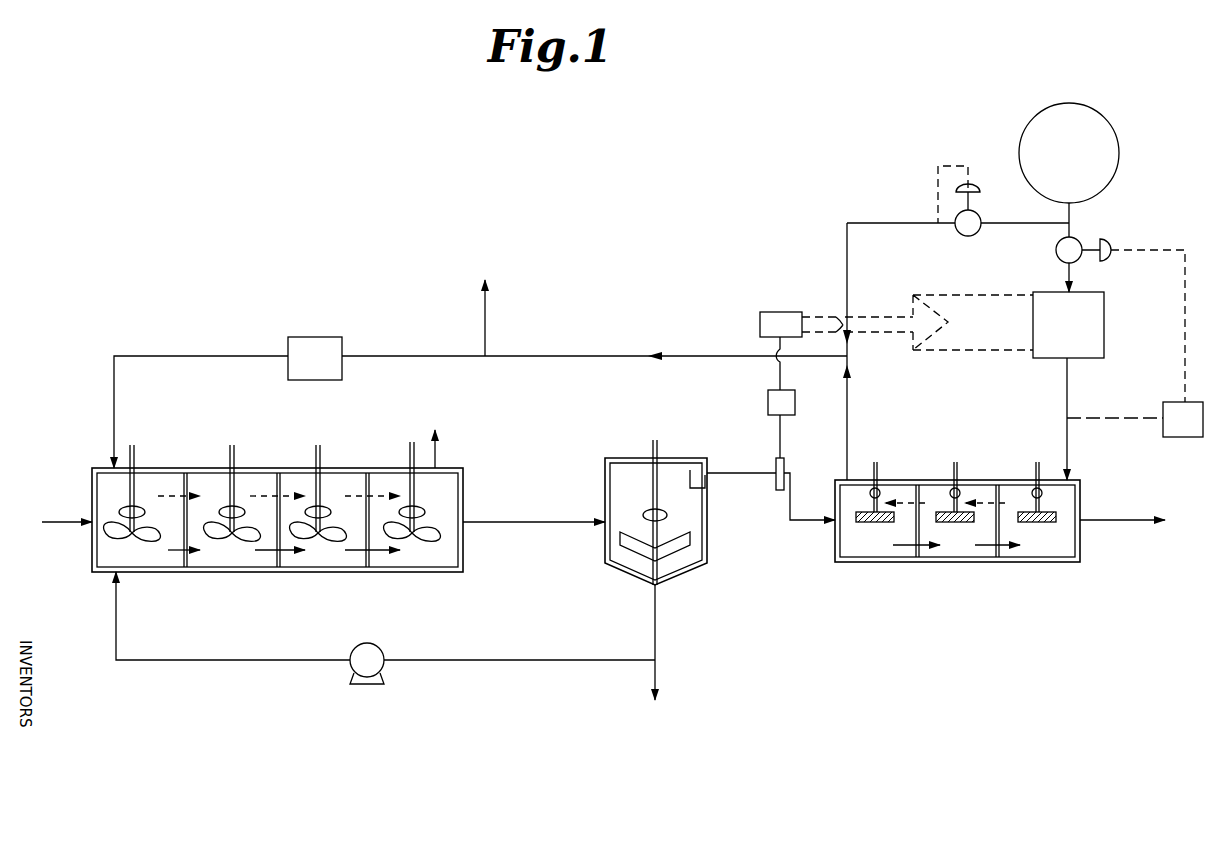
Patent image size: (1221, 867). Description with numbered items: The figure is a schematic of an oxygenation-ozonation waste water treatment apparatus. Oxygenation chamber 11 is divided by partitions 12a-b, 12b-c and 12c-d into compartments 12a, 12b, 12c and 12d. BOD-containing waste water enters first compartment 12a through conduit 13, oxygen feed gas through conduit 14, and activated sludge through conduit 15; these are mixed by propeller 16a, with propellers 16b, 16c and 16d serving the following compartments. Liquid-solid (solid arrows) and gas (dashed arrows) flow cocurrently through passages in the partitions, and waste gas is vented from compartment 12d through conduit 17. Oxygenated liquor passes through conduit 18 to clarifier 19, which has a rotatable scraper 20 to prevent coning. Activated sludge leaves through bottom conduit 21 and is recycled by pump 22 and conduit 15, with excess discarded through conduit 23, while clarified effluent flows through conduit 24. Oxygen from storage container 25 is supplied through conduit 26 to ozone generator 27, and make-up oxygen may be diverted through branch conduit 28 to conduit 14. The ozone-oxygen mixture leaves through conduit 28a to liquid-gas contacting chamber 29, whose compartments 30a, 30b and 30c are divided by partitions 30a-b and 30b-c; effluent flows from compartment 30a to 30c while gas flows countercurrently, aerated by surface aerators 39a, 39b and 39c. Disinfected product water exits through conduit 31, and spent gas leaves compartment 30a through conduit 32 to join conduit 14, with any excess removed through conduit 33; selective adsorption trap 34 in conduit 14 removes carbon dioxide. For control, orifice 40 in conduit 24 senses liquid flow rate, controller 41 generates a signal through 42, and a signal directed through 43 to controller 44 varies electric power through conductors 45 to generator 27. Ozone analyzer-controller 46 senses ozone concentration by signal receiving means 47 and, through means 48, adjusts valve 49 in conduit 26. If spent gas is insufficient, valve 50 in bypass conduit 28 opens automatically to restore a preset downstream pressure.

The oxygenation chamber 11 is at (340, 466).
The first compartment 12a is at (150, 560).
The second compartment 12b is at (236, 560).
The third compartment 12c is at (336, 560).
The fourth compartment 12d is at (437, 560).
The partition 12a-b is at (183, 480).
The partition 12b-c is at (276, 480).
The partition 12c-d is at (366, 476).
The conduit 13 is at (50, 520).
The conduit 14 is at (199, 356).
The conduit 15 is at (201, 660).
The propeller 16a is at (118, 528).
The propeller 16b is at (222, 538).
The propeller 16c is at (308, 538).
The propeller 16d is at (404, 538).
The conduit 17 is at (435, 447).
The conduit 18 is at (500, 522).
The clarifier 19 is at (610, 458).
The rotatable scraper 20 is at (688, 548).
The bottom conduit 21 is at (655, 622).
The pump 22 is at (382, 670).
The conduit 23 is at (655, 673).
The conduit 24 is at (747, 472).
The storage container 25 is at (1069, 104).
The conduit 26 is at (1075, 228).
The ozone generator 27 is at (1050, 312).
The branch conduit 28 is at (893, 222).
The conduit 28a is at (1067, 388).
The liquid-gas contacting chamber 29 is at (1044, 566).
The first compartment 30a is at (882, 555).
The second compartment 30b is at (964, 555).
The third compartment 30c is at (1062, 555).
The partition 30a-b is at (916, 494).
The partition 30b-c is at (994, 490).
The conduit 31 is at (1105, 520).
The conduit 32 is at (847, 388).
The conduit 33 is at (485, 328).
The selective adsorption trap 34 is at (309, 337).
The surface aerator 39a is at (866, 522).
The surface aerator 39b is at (948, 522).
The surface aerator 39c is at (1048, 522).
The orifice 40 is at (776, 482).
The controller 41 is at (768, 403).
The signal path 42 is at (784, 438).
The signal path 43 is at (780, 356).
The controller 44 is at (782, 325).
The conductors 45 is at (917, 322).
The ozone analyzer-controller 46 is at (1185, 437).
The signal receiving means 47 is at (1103, 418).
The signal transmitting means 48 is at (1185, 322).
The valve 49 is at (1108, 255).
The valve 50 is at (978, 186).